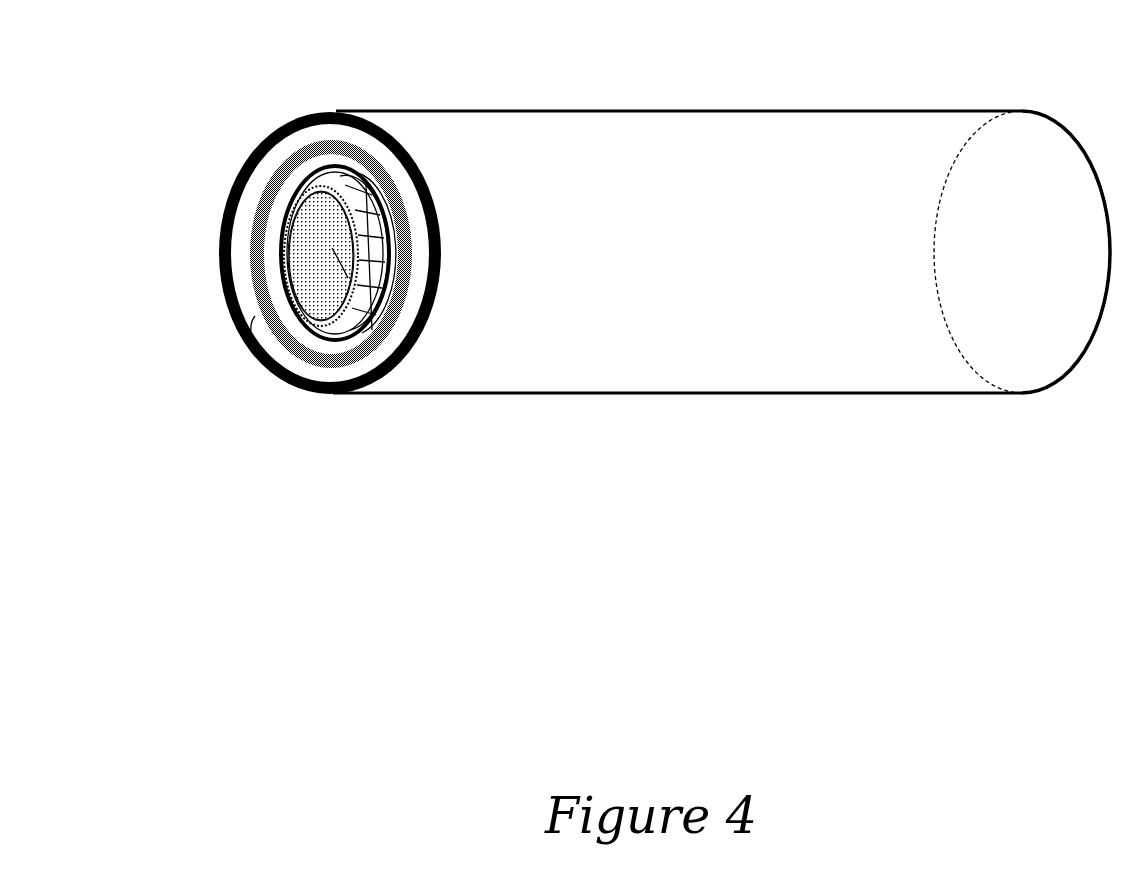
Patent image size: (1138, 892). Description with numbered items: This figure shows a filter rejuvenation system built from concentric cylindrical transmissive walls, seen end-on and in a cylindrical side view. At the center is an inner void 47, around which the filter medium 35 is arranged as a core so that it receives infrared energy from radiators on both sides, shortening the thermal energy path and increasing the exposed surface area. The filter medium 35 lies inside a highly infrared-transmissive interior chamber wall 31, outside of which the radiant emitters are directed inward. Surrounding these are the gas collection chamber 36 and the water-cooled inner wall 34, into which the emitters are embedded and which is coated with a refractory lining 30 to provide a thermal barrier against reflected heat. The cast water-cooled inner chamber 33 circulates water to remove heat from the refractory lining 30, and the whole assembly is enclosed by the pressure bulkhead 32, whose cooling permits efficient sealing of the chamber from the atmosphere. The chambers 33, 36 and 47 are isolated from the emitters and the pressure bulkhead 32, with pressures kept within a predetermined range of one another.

The refractory lining 30 is at (298, 343).
The highly infrared-transmissive interior chamber wall 31 is at (272, 185).
The pressure bulkhead 32 is at (452, 155).
The cast water-cooled inner chamber 33 is at (248, 352).
The water-cooled inner wall 34 is at (283, 370).
The filter medium 35 is at (323, 338).
The gas collection chamber 36 is at (267, 255).
The inner void 47 is at (380, 325).